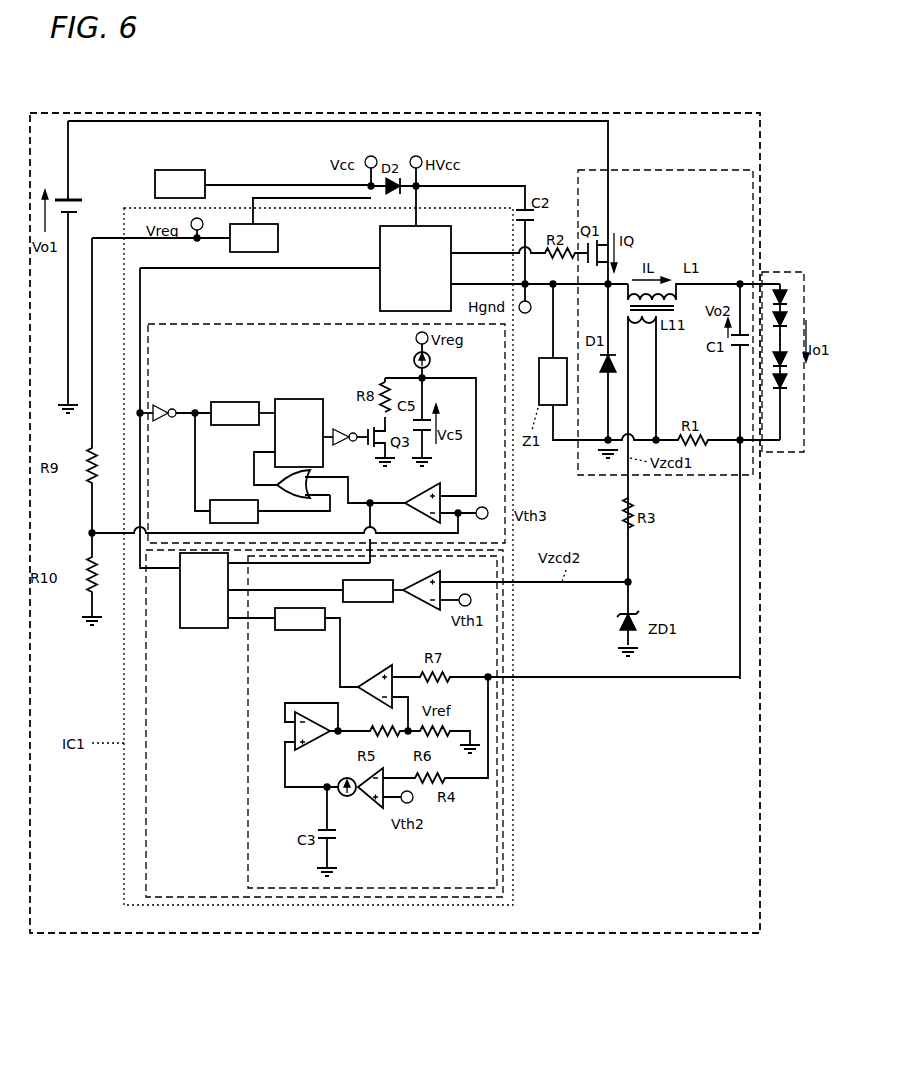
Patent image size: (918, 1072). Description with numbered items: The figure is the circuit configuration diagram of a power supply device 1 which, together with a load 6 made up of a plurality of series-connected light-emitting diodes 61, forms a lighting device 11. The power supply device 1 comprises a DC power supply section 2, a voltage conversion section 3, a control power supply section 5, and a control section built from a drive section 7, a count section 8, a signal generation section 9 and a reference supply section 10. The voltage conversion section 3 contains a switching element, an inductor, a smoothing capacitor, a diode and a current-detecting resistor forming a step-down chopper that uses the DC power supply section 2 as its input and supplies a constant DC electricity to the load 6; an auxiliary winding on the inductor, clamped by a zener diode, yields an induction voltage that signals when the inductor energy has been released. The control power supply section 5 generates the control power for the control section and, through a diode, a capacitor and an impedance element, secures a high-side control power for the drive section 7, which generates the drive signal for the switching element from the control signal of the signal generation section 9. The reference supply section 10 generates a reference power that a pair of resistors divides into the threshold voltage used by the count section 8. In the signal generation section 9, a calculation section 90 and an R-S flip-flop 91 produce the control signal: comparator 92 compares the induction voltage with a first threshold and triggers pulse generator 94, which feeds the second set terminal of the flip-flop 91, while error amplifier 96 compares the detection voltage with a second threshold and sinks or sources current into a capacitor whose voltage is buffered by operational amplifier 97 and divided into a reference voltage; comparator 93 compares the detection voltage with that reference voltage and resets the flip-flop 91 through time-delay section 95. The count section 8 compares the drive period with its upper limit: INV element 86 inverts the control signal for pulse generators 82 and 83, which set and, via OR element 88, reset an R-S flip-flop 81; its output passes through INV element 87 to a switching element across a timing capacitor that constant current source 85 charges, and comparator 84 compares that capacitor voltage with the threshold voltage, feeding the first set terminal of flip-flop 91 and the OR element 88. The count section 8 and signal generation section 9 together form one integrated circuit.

The power supply device 1 is at (746, 113).
The lighting device 11 is at (790, 131).
The DC power supply section 2 is at (70, 200).
The voltage conversion section 3 is at (722, 170).
The control power supply section 5 is at (190, 172).
The load 6 is at (800, 272).
The light-emitting diode 61 is at (787, 296).
The drive section 7 is at (452, 236).
The count section 8 is at (268, 324).
The signal generation section 9 is at (146, 684).
The reference supply section 10 is at (280, 238).
The R-S flip-flop 81 is at (303, 405).
The pulse generator 82 is at (236, 404).
The pulse generator 83 is at (222, 501).
The comparator 84 is at (414, 509).
The constant current source 85 is at (411, 361).
The INV element 86 is at (160, 406).
The INV element 87 is at (340, 446).
The OR element 88 is at (262, 478).
The calculation section 90 is at (500, 815).
The R-S flip-flop 91 is at (200, 630).
The comparator 92 is at (424, 606).
The comparator 93 is at (371, 675).
The pulse generator 94 is at (368, 604).
The time-delay section 95 is at (285, 632).
The error amplifier 96 is at (360, 804).
The operational amplifier 97 is at (312, 745).